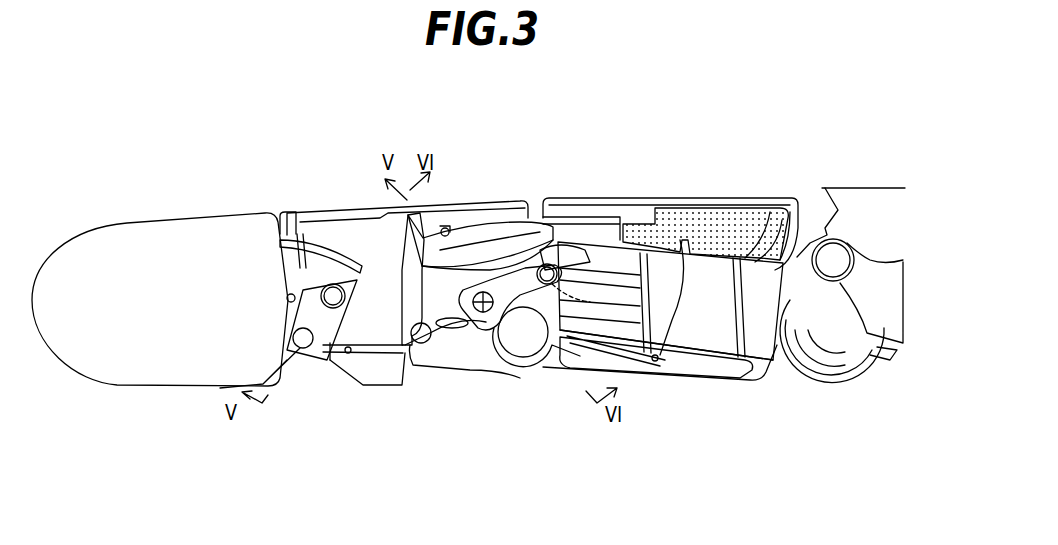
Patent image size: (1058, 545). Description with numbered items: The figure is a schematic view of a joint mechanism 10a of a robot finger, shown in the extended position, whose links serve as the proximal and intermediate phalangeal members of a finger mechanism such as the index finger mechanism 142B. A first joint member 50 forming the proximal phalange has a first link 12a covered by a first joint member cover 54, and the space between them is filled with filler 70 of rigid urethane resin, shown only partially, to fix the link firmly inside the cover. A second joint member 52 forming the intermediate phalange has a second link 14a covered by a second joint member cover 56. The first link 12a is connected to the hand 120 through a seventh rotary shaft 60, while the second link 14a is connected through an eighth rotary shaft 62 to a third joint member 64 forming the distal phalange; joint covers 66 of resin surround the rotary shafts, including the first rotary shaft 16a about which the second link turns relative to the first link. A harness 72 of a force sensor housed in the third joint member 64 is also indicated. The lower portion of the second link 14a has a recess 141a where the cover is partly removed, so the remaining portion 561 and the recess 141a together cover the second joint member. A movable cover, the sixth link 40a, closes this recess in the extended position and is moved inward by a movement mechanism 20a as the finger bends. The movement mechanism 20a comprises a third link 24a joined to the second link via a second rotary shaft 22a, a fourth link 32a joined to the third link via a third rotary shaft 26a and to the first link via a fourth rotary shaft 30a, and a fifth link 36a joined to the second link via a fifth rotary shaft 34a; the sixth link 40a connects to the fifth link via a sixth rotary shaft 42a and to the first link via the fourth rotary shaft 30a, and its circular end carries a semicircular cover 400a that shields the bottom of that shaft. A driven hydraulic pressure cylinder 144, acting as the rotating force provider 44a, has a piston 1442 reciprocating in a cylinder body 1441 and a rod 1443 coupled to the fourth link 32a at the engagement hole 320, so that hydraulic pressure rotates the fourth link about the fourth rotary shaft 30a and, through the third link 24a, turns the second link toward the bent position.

The third joint member 64 is at (132, 240).
The second joint member cover 56 is at (290, 214).
The joint covers 66 is at (282, 249).
The eighth rotary shaft 62 is at (287, 300).
The third rotary shaft 26a is at (300, 250).
The second joint member 52 is at (346, 211).
The second link 14a is at (366, 206).
The fifth link 36a is at (428, 250).
The fifth rotary shaft 34a is at (452, 229).
The fourth link 32a is at (520, 230).
The movement mechanism 20a is at (565, 242).
The joint mechanism 10a is at (624, 154).
The first link 12a is at (565, 248).
The first joint member 50 is at (683, 185).
The first joint member cover 54 is at (748, 205).
The filler 70 is at (728, 238).
The driven hydraulic pressure cylinder 144 is at (670, 301).
The rotating force provider 44a is at (693, 330).
The piston 1442 is at (660, 276).
The rod 1443 is at (600, 307).
The cylinder body 1441 is at (668, 365).
The hand 120 is at (855, 177).
The index finger mechanism 142B is at (851, 193).
The seventh rotary shaft 60 is at (855, 302).
The cam plate 320 is at (524, 297).
The first rotary shaft 16a is at (483, 312).
The semicircular cover 400a is at (520, 362).
The sixth link 40a is at (455, 352).
The sixth rotary shaft 42a is at (421, 346).
The third link 24a is at (330, 348).
The second rotary shaft 22a is at (300, 348).
The harness 72 is at (348, 354).
The recess 141a is at (358, 388).
The remaining portion 561 is at (345, 375).
The fourth rotary shaft 30a is at (545, 372).